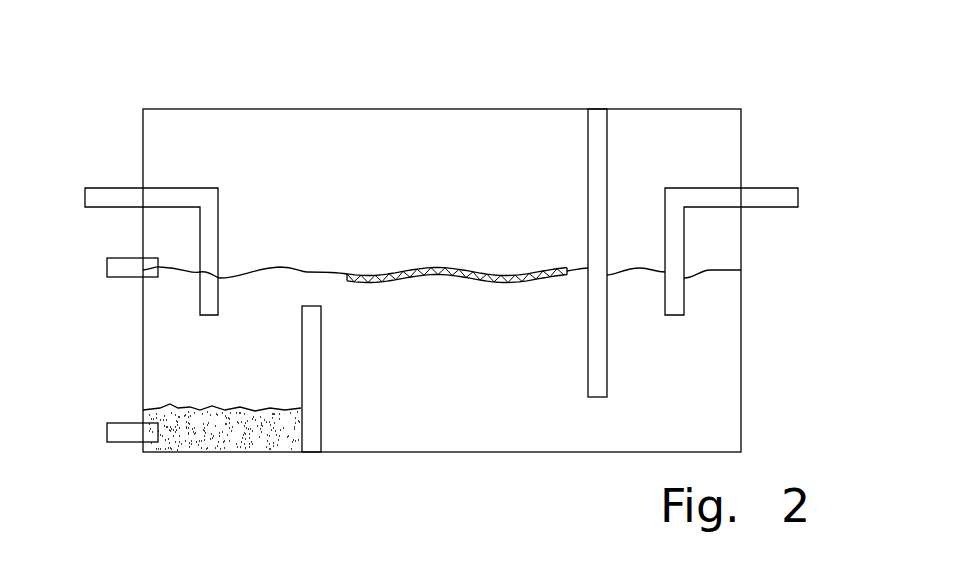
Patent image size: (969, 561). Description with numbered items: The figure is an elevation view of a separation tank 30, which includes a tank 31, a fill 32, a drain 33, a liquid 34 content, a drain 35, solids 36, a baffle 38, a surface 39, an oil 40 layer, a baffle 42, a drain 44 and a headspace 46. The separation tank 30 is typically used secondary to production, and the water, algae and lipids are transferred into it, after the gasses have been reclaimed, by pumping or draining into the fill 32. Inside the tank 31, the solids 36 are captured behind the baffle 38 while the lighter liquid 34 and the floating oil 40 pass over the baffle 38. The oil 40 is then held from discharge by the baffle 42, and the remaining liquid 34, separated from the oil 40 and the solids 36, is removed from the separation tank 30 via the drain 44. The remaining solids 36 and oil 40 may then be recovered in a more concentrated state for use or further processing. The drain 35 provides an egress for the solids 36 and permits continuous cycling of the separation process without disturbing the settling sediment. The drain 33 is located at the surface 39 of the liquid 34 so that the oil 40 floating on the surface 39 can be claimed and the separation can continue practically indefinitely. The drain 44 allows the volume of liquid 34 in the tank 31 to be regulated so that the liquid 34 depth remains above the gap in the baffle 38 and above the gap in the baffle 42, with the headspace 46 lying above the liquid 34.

The separation tank 30 is at (514, 93).
The tank 31 is at (251, 109).
The fill 32 is at (107, 187).
The drain 33 is at (118, 258).
The liquid 34 is at (158, 353).
The drain 35 is at (117, 422).
The solids 36 is at (198, 437).
The baffle 38 is at (321, 378).
The surface 39 is at (307, 268).
The oil layer 40 is at (396, 274).
The baffle 42 is at (588, 360).
The drain 44 is at (762, 195).
The headspace 46 is at (645, 127).